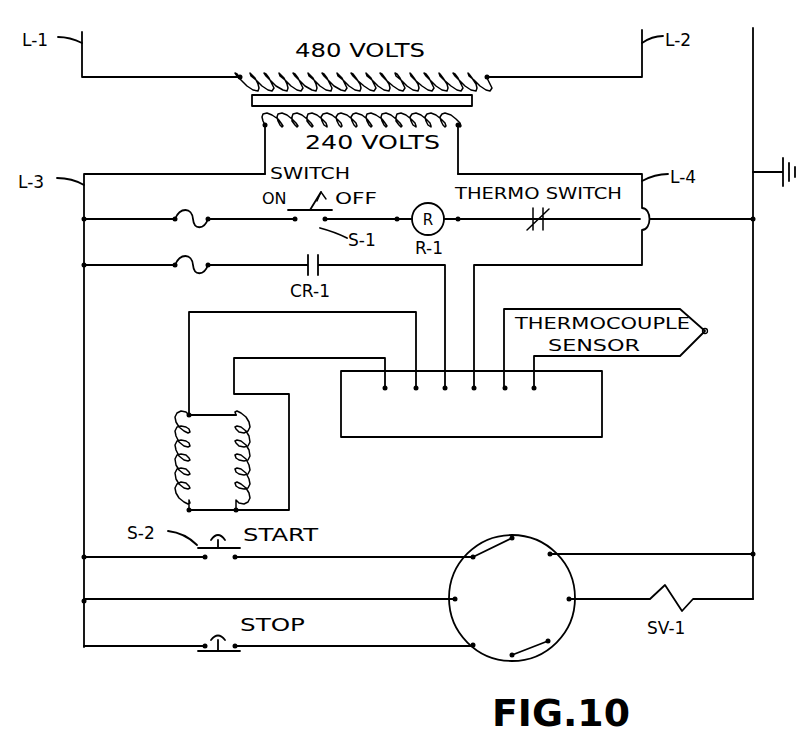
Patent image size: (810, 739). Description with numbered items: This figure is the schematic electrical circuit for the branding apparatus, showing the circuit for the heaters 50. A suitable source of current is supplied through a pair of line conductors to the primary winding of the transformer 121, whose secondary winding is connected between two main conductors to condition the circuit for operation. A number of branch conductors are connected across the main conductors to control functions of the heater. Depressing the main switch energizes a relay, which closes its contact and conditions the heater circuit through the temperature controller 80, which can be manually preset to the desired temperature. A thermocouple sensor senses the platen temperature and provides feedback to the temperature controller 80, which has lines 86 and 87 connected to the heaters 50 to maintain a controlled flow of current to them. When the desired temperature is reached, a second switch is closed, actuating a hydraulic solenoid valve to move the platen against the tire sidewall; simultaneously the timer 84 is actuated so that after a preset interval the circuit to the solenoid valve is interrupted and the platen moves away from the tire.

The transformer 121 is at (492, 110).
The line 86 is at (189, 358).
The line 87 is at (237, 378).
The heaters 50 is at (229, 460).
The temperature controller 80 is at (602, 413).
The timer 84 is at (541, 541).